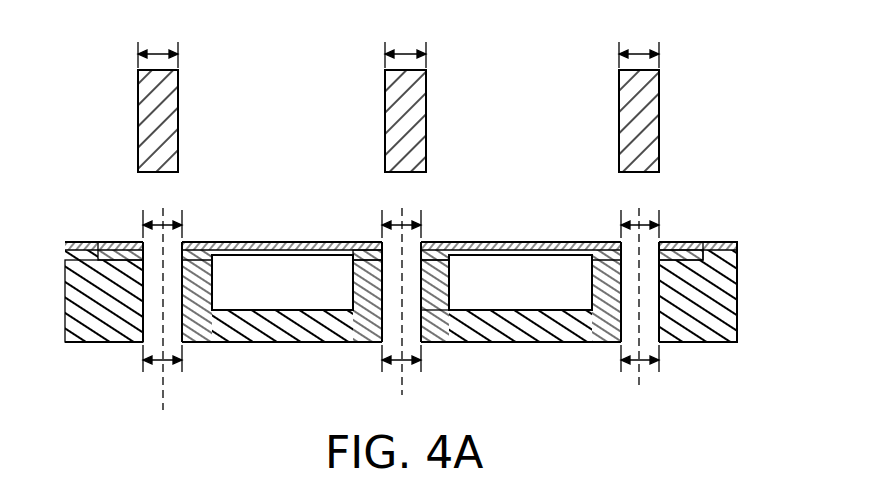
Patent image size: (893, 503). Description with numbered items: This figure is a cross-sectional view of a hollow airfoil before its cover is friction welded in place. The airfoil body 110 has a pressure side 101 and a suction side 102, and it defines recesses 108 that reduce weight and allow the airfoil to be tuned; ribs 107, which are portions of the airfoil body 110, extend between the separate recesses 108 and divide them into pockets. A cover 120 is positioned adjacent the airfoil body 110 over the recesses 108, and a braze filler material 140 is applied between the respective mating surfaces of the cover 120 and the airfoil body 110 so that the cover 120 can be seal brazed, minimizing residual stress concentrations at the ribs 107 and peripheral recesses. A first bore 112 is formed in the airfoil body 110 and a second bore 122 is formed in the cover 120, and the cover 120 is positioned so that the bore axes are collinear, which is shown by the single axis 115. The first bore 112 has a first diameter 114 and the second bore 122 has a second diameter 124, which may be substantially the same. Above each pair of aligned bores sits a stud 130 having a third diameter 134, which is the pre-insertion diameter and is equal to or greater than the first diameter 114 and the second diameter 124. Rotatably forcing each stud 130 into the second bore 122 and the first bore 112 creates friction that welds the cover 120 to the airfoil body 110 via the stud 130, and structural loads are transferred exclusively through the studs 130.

The pressure side 101 is at (86, 242).
The suction side 102 is at (250, 345).
The rib 107 is at (440, 283).
The recess 108 is at (402, 282).
The airfoil body 110 is at (103, 322).
The first bore 112 is at (175, 328).
The first diameter 114 is at (164, 372).
The axis 115 is at (162, 375).
The cover 120 is at (290, 248).
The second bore 122 is at (184, 253).
The second diameter 124 is at (170, 223).
The stud 130 is at (170, 105).
The third diameter 134 is at (165, 53).
The braze filler material 140 is at (365, 256).